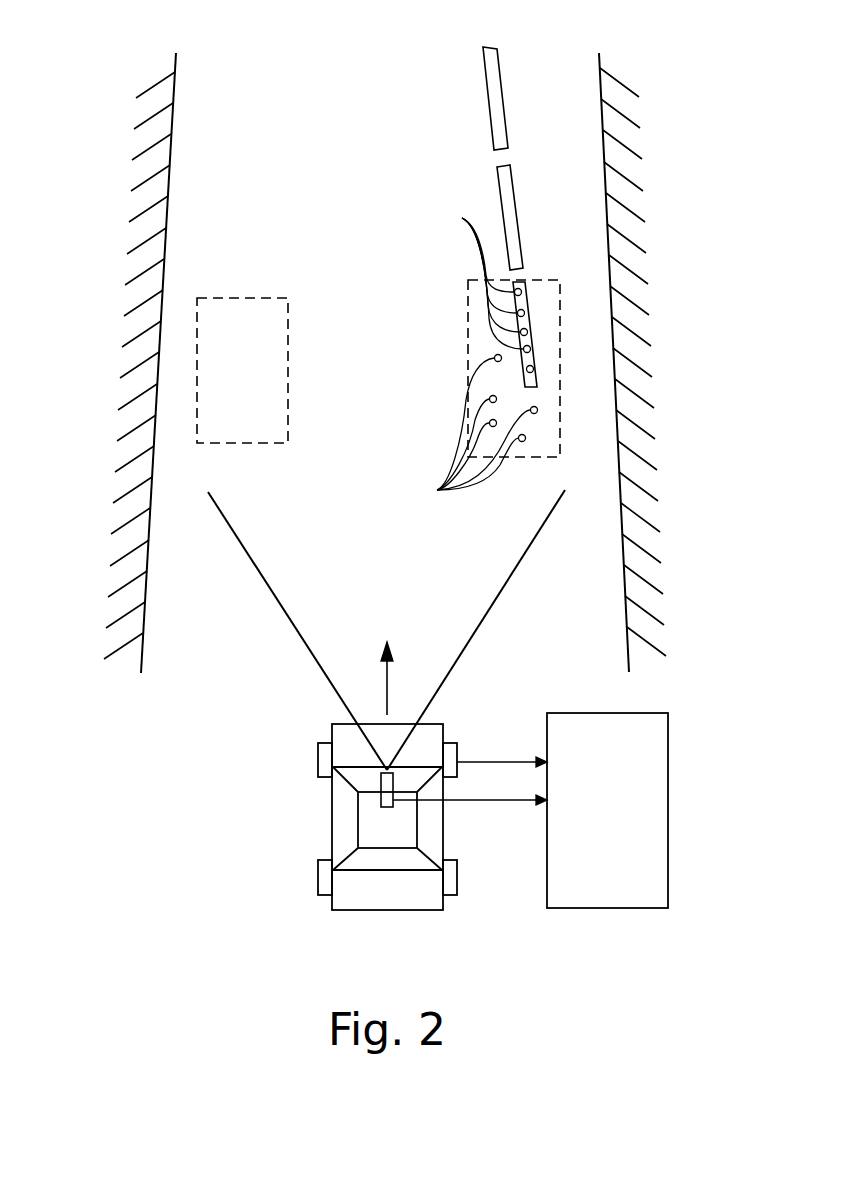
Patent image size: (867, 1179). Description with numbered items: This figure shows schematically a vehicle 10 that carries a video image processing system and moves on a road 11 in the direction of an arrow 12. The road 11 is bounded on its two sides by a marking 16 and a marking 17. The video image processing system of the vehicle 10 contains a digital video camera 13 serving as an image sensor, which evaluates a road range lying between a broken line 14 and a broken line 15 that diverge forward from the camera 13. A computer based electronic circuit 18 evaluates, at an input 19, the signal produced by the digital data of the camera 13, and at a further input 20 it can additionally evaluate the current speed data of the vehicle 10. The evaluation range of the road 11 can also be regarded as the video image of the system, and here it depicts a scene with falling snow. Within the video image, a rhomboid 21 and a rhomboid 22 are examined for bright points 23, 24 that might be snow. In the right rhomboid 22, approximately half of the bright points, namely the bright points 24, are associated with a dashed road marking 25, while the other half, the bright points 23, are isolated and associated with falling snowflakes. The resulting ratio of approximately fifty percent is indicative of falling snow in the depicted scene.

The vehicle 10 is at (370, 832).
The road 11 is at (565, 382).
The arrow 12 is at (406, 673).
The digital video camera 13 is at (385, 802).
The broken line 14 is at (217, 507).
The broken line 15 is at (560, 507).
The marking 16 is at (158, 342).
The marking 17 is at (612, 303).
The computer based electronic circuit 18 is at (637, 712).
The input 19 is at (490, 758).
The input 20 is at (528, 803).
The rhomboid 21 is at (237, 298).
The rhomboid 22 is at (518, 262).
The bright points 23 is at (470, 430).
The bright points 24 is at (477, 274).
The dashed road marking 25 is at (503, 197).